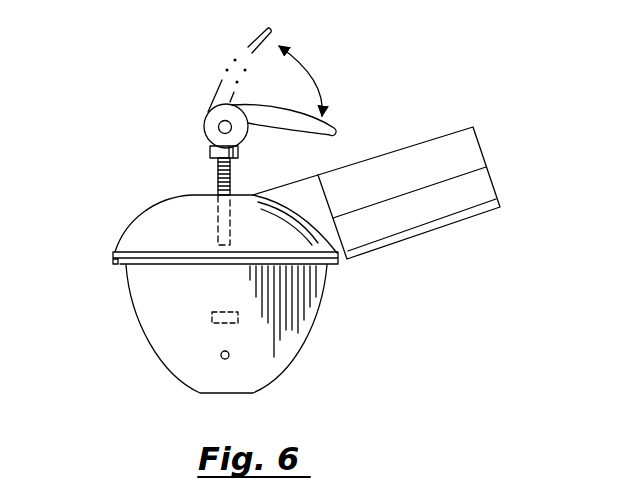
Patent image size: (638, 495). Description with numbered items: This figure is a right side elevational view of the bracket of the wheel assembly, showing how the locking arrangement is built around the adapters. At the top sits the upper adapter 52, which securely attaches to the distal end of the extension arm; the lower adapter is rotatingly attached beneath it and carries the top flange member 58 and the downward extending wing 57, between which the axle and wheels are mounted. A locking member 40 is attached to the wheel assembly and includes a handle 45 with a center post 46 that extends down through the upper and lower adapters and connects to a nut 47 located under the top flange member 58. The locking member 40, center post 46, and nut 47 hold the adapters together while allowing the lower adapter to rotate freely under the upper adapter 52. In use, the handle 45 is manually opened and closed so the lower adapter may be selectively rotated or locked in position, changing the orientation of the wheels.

The locking member 40 is at (212, 76).
The handle 45 is at (322, 122).
The center post 46 is at (233, 176).
The upper adapter 52 is at (200, 188).
The top flange member 58 is at (113, 261).
The downward extending wing 57 is at (192, 363).
The nut 47 is at (218, 318).